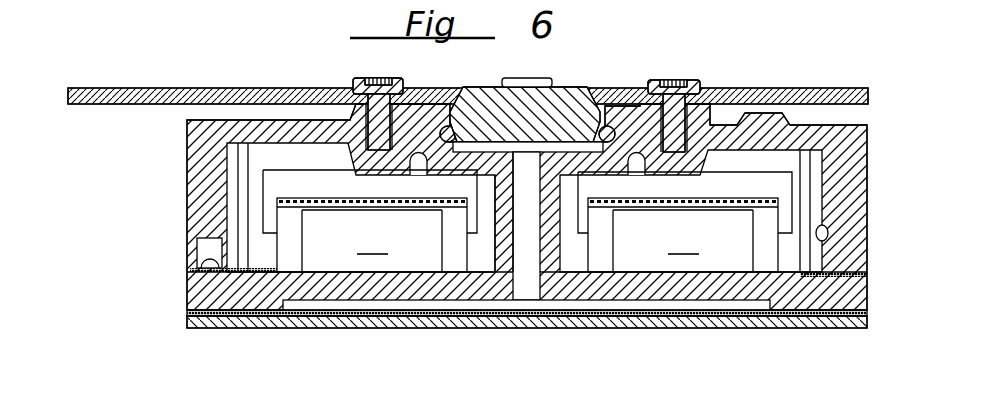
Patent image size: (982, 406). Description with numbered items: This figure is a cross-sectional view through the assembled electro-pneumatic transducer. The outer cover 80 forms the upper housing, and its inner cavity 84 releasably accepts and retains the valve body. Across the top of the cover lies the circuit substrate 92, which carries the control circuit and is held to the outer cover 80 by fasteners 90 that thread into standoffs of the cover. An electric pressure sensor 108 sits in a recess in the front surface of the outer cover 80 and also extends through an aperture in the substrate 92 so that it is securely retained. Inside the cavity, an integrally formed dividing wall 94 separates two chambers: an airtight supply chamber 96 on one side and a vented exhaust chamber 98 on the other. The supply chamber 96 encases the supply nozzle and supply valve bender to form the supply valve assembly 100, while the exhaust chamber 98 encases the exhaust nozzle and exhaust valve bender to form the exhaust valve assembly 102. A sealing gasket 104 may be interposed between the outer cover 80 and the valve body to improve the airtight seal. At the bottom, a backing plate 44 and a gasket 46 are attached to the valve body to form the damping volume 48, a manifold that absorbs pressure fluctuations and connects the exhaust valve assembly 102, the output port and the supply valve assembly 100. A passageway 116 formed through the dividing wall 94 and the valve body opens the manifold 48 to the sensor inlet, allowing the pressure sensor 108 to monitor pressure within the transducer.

The backing plate 44 is at (760, 330).
The gasket 46 is at (828, 330).
The damping volume 48 is at (556, 306).
The outer cover 80 is at (198, 214).
The inner cavity 84 is at (828, 236).
The fasteners 90 is at (402, 79).
The circuit substrate 92 is at (270, 91).
The dividing wall 94 is at (500, 258).
The supply chamber 96 is at (817, 203).
The exhaust chamber 98 is at (263, 252).
The supply valve assembly 100 is at (685, 222).
The exhaust valve assembly 102 is at (370, 221).
The sealing gasket 104 is at (867, 276).
The pressure sensor 108 is at (577, 96).
The passageway 116 is at (527, 290).